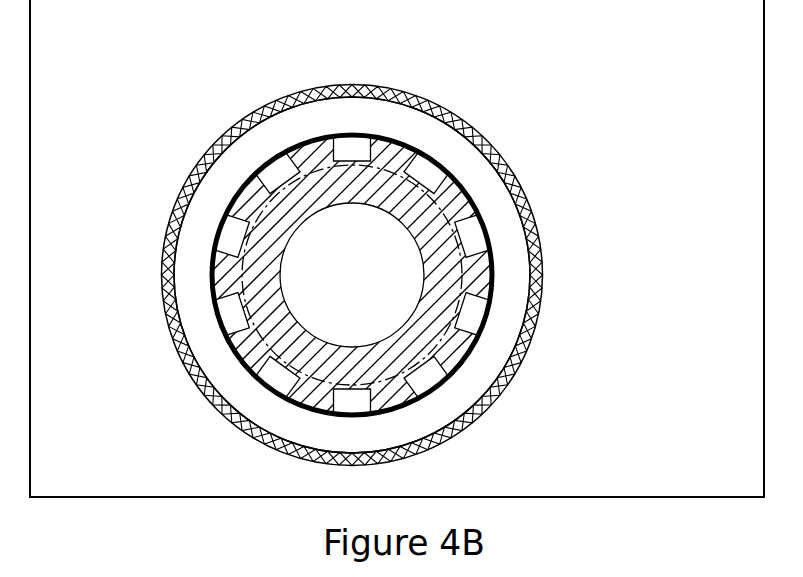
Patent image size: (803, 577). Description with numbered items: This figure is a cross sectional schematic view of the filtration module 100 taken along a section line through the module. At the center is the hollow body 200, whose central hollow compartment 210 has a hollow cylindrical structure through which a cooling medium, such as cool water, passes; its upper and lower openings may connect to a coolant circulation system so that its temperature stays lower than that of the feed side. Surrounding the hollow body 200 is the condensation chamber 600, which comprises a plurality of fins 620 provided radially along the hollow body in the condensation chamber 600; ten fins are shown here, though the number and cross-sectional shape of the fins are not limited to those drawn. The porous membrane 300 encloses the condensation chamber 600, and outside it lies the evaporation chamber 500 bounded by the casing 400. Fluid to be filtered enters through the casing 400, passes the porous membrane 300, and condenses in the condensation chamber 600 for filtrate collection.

The filtration module 100 is at (87, 27).
The hollow body 200 is at (381, 254).
The central hollow compartment 210 is at (340, 245).
The porous membrane 300 is at (460, 368).
The casing 400 is at (453, 428).
The evaporation chamber 500 is at (505, 280).
The condensation chamber 600 is at (470, 317).
The fins 620 is at (390, 152).